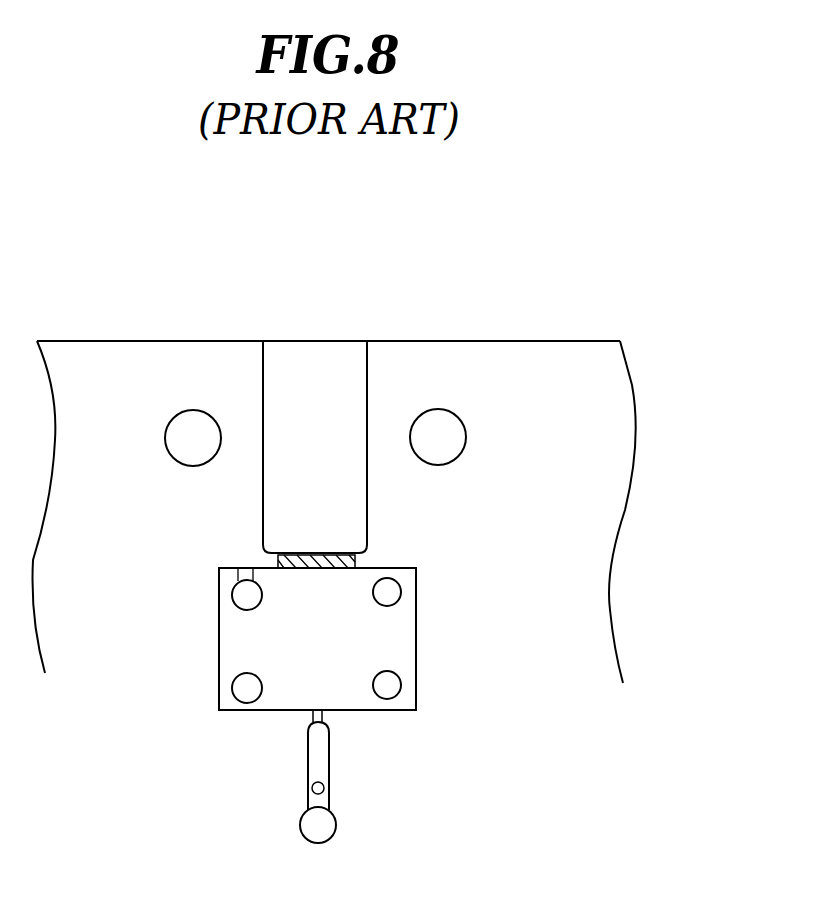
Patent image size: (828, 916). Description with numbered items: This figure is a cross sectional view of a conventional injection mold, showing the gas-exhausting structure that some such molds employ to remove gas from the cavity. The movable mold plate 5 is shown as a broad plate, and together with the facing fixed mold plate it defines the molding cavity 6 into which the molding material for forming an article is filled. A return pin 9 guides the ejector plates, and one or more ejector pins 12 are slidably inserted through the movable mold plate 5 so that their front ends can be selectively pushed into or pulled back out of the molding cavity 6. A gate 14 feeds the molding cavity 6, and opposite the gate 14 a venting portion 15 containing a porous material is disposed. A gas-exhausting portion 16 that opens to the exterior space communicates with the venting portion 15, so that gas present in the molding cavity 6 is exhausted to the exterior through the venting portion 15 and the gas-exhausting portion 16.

The movable mold plate 5 is at (603, 393).
The molding cavity 6 is at (378, 642).
The return pin 9 is at (190, 421).
The ejector pin 12 is at (240, 596).
The gate 14 is at (325, 712).
The venting portion 15 is at (277, 560).
The gas-exhausting portion 16 is at (309, 378).